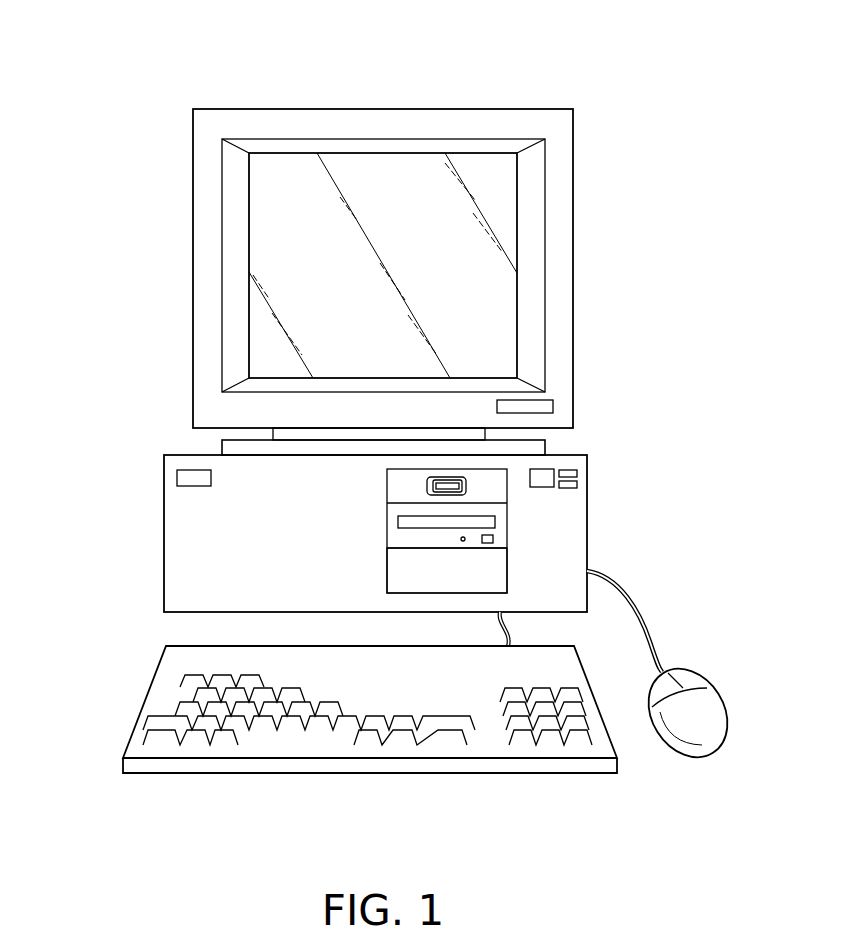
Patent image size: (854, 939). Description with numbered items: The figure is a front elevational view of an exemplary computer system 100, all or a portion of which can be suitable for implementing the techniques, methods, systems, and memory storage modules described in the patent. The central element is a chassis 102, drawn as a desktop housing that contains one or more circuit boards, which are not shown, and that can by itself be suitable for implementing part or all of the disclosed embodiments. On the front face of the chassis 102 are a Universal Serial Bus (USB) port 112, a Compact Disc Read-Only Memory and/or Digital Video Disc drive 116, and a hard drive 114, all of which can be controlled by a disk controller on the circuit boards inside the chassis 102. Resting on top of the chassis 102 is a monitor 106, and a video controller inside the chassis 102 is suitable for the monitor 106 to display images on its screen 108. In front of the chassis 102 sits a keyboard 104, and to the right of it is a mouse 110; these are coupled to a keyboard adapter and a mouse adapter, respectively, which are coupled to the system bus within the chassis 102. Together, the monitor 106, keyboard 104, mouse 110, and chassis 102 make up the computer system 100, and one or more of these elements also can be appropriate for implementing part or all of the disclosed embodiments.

The computer system 100 is at (569, 83).
The chassis 102 is at (164, 533).
The keyboard 104 is at (145, 700).
The monitor 106 is at (270, 109).
The screen 108 is at (300, 270).
The mouse 110 is at (705, 695).
The Universal Serial Bus (USB) port 112 is at (466, 483).
The hard drive 114 is at (497, 570).
The CD-ROM and/or DVD drive 116 is at (497, 528).